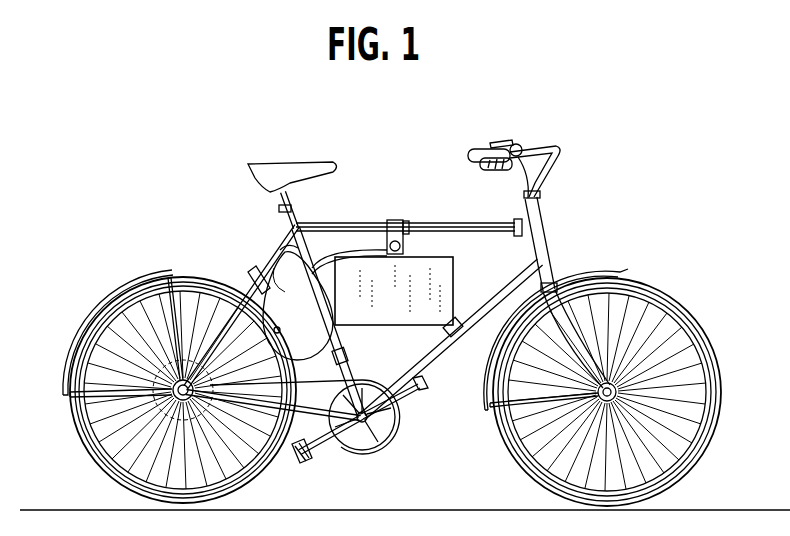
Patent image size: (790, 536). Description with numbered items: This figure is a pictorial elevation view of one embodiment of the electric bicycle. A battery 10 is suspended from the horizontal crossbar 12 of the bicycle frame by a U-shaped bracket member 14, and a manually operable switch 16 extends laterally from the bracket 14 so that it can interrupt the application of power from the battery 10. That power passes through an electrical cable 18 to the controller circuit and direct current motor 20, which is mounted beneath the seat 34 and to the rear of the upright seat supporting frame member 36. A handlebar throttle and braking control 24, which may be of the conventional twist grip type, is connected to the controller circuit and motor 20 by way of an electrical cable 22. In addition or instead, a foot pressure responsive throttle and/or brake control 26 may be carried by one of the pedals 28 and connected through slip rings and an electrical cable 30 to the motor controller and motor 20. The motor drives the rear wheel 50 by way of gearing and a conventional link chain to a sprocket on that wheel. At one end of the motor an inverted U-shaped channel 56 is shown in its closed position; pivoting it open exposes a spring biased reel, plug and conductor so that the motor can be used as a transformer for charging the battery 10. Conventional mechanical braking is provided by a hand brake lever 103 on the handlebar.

The battery 10 is at (453, 282).
The horizontal crossbar 12 is at (455, 223).
The U-shaped bracket member 14 is at (393, 220).
The manually operable switch 16 is at (406, 225).
The electrical cable 18 is at (358, 246).
The controller circuit and direct current motor 20 is at (289, 290).
The electrical cable 22 is at (478, 233).
The handlebar throttle and braking control 24 is at (494, 171).
The foot pressure responsive throttle and/or brake control 26 is at (314, 453).
The pedal 28 is at (299, 464).
The electrical cable 30 is at (343, 350).
The seat 34 is at (267, 166).
The seat supporting frame member 36 is at (292, 214).
The rear wheel 50 is at (105, 478).
The inverted U-shaped channel 56 is at (268, 292).
The hand brake lever 103 is at (518, 143).